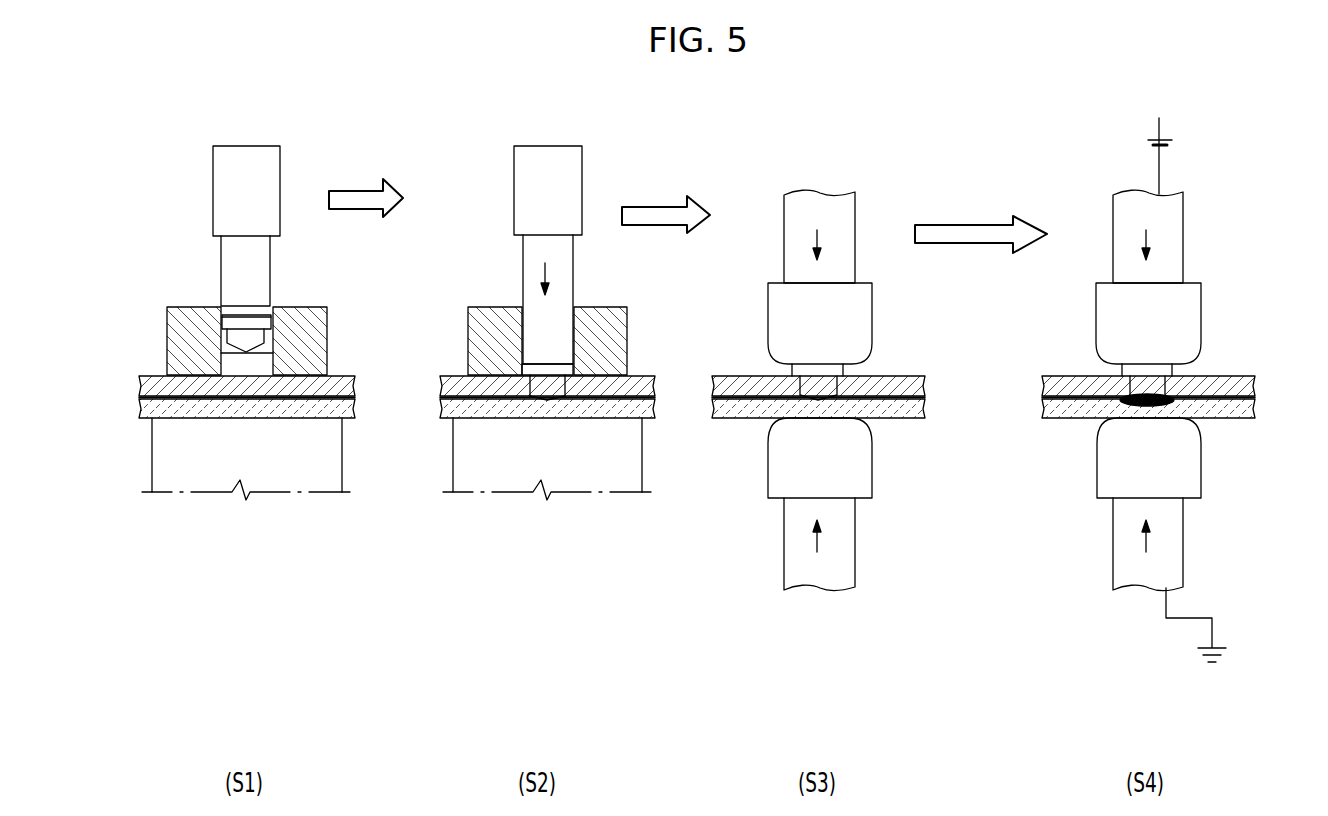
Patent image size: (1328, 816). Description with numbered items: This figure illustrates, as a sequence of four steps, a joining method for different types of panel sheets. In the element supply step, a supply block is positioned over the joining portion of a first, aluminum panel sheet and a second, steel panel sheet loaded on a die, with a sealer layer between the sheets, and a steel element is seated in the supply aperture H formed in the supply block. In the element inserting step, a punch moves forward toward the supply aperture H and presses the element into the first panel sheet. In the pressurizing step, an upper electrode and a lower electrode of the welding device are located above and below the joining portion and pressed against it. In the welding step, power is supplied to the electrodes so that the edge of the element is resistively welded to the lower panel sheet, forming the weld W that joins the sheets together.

The supply aperture H is at (222, 310).
The weld W is at (1202, 378).